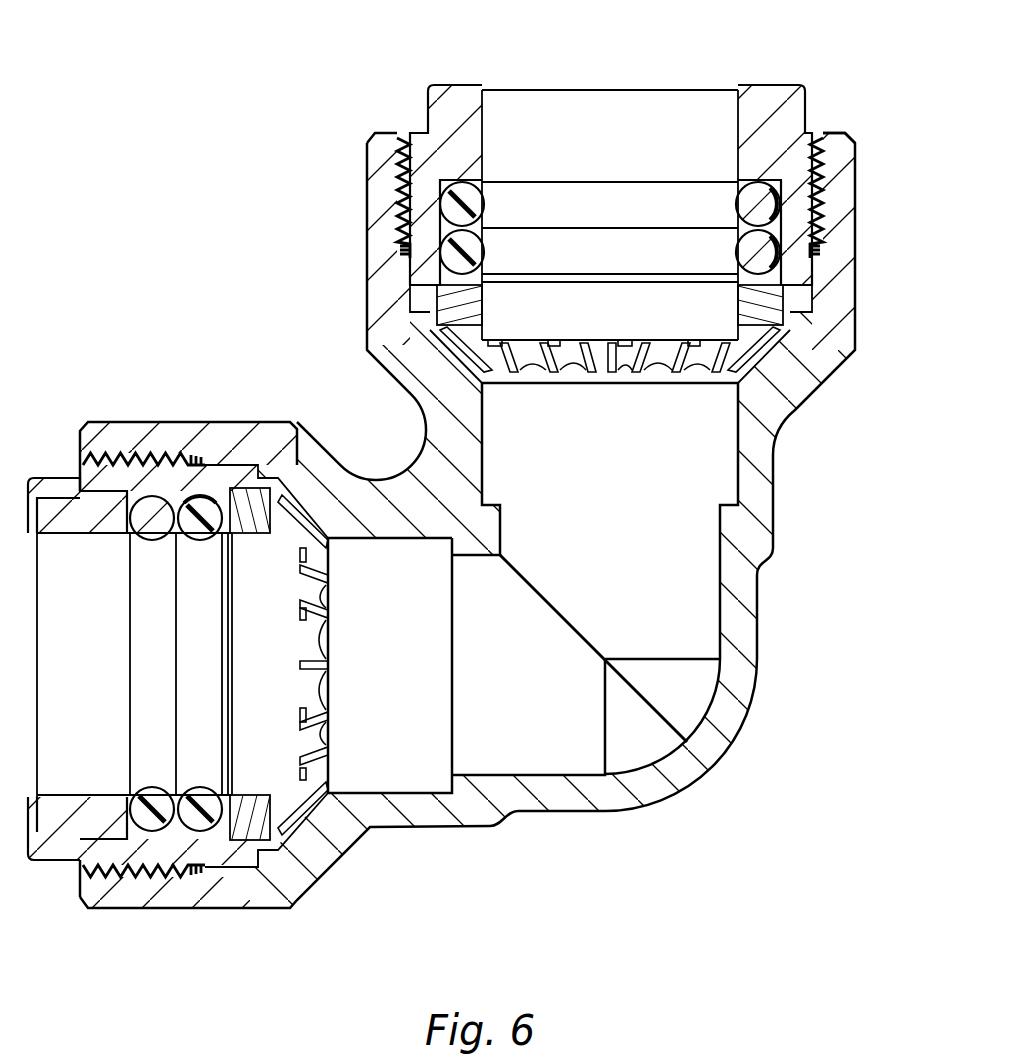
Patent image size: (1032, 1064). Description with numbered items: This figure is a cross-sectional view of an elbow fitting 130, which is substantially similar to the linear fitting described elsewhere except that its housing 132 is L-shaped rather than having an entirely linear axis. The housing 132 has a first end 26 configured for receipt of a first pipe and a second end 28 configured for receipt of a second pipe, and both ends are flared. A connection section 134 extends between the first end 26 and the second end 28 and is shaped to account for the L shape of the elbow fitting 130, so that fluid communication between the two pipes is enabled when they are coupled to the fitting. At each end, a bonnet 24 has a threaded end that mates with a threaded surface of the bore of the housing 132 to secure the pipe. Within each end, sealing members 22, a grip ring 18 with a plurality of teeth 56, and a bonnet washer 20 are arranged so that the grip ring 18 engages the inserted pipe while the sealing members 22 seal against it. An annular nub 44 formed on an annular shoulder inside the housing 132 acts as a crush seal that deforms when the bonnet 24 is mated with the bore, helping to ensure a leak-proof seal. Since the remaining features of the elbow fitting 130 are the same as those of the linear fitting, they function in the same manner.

The elbow fitting 130 is at (193, 175).
The housing 132 is at (130, 412).
The connection section 134 is at (720, 767).
The first end 26 is at (864, 190).
The bonnet 24 is at (768, 100).
The sealing members 22 is at (588, 207).
The annular nub 44 is at (420, 328).
The teeth 56 is at (634, 352).
The grip ring 18 is at (562, 381).
The bonnet washer 20 is at (250, 815).
The second end 28 is at (150, 918).